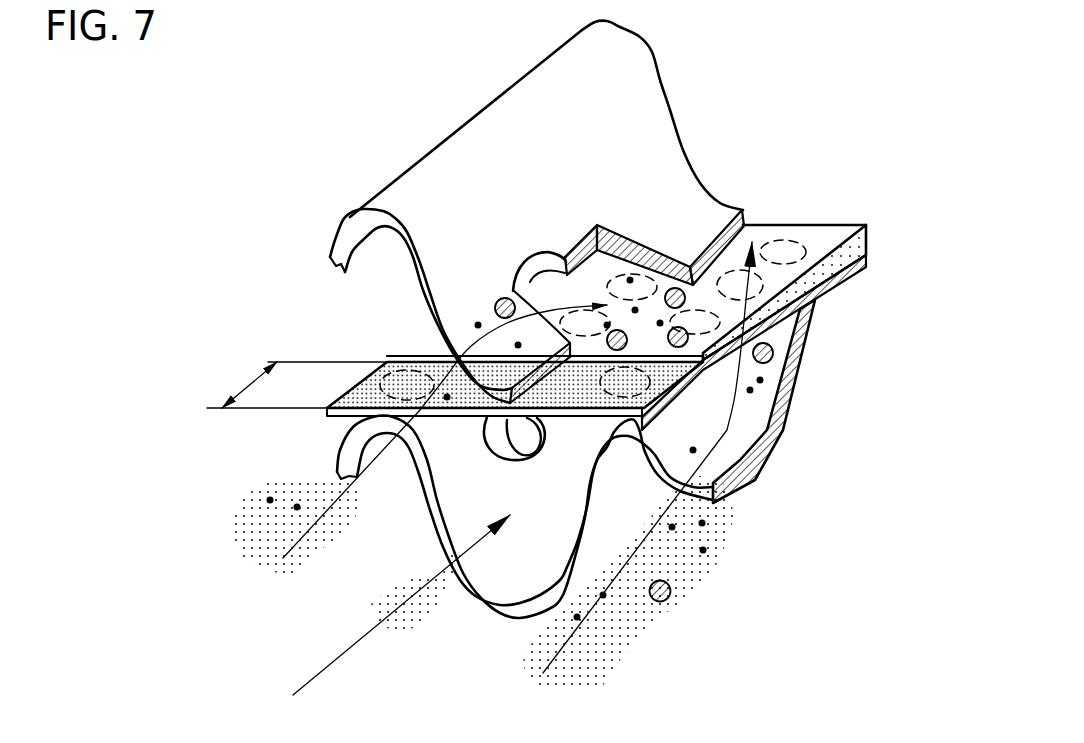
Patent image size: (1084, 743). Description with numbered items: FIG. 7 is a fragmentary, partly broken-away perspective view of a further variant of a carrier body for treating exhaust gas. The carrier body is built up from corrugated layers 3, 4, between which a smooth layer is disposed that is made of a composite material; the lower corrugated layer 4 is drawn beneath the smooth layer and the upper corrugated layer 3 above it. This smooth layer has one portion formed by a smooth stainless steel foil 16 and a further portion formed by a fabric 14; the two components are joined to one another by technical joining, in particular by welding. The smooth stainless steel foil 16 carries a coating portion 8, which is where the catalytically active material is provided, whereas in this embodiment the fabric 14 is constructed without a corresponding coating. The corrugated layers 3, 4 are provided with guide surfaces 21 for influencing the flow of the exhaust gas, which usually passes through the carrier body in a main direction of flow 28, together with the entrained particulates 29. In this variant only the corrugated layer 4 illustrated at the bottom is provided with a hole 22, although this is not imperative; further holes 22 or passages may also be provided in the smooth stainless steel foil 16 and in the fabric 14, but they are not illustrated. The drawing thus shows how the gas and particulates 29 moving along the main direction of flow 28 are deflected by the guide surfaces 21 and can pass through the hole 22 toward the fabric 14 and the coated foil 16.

The corrugated layer 3 is at (497, 133).
The lower corrugated sheet 4 is at (497, 570).
The coating portion 8 is at (250, 384).
The fabric 14 is at (818, 238).
The smooth stainless steel foil 16 is at (753, 450).
The guide surface 21 is at (740, 487).
The hole 22 is at (513, 433).
The main direction of flow 28 is at (315, 678).
The particulates 29 is at (668, 598).